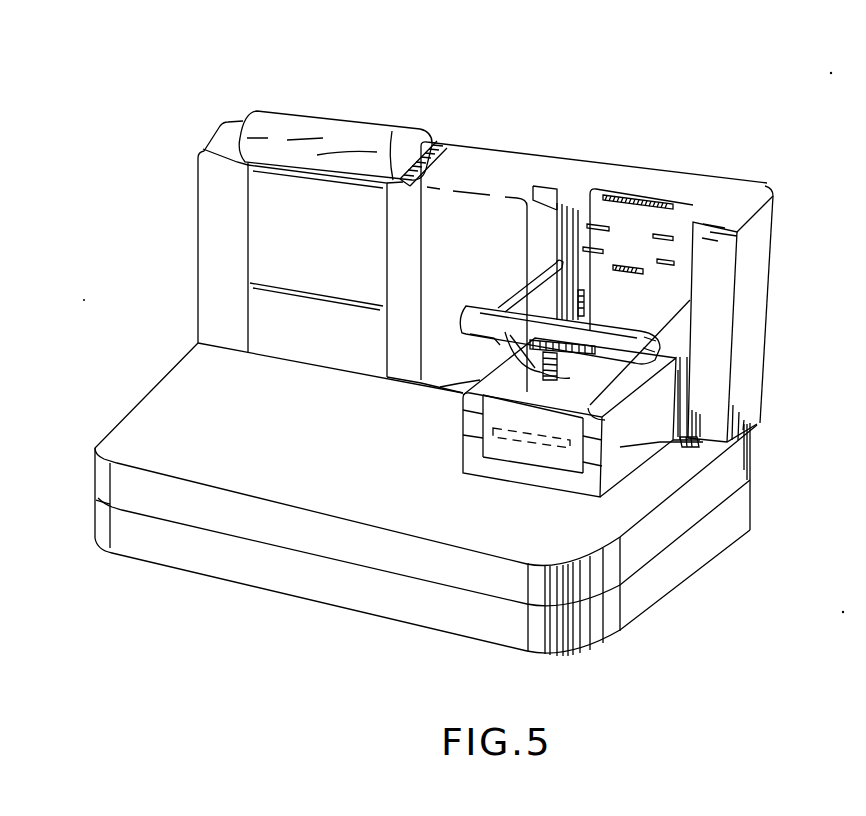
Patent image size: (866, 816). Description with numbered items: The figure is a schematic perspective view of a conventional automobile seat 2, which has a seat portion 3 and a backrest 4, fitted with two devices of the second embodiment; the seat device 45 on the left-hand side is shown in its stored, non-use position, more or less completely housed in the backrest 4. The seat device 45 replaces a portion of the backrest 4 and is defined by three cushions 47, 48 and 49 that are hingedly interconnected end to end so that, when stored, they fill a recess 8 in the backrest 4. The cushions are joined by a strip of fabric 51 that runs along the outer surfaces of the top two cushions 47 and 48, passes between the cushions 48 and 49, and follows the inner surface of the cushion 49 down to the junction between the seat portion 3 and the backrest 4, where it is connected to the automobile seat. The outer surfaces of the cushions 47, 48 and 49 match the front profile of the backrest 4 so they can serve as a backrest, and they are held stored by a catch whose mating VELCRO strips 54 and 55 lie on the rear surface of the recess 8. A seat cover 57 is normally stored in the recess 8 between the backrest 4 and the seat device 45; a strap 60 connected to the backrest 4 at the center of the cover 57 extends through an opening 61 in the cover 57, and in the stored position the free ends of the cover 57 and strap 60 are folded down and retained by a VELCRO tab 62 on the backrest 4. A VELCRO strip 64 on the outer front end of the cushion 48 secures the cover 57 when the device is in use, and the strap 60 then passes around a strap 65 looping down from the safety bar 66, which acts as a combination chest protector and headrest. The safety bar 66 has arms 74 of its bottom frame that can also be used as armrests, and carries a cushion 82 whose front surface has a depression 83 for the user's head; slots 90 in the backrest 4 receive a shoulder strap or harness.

The automobile seat 2 is at (250, 578).
The seat portion 3 is at (238, 449).
The backrest 4 is at (463, 162).
The recess 8 is at (587, 205).
The seat device 45 is at (400, 98).
The cushion 47 is at (627, 412).
The cushion 48 is at (620, 447).
The cushion 49 is at (298, 345).
The strip of fabric 51 is at (258, 253).
The VELCRO strip 54 is at (640, 197).
The VELCRO strip 55 is at (586, 297).
The seat cover 57 is at (490, 452).
The strap 60 is at (486, 382).
The opening 61 is at (703, 442).
The VELCRO tab 62 is at (645, 273).
The VELCRO strip 64 is at (537, 447).
The strap 65 is at (540, 310).
The safety bar 66 is at (445, 352).
The arms 74 is at (548, 268).
The cushion 82 is at (276, 122).
The depression 83 is at (320, 155).
The slots 90 is at (614, 253).